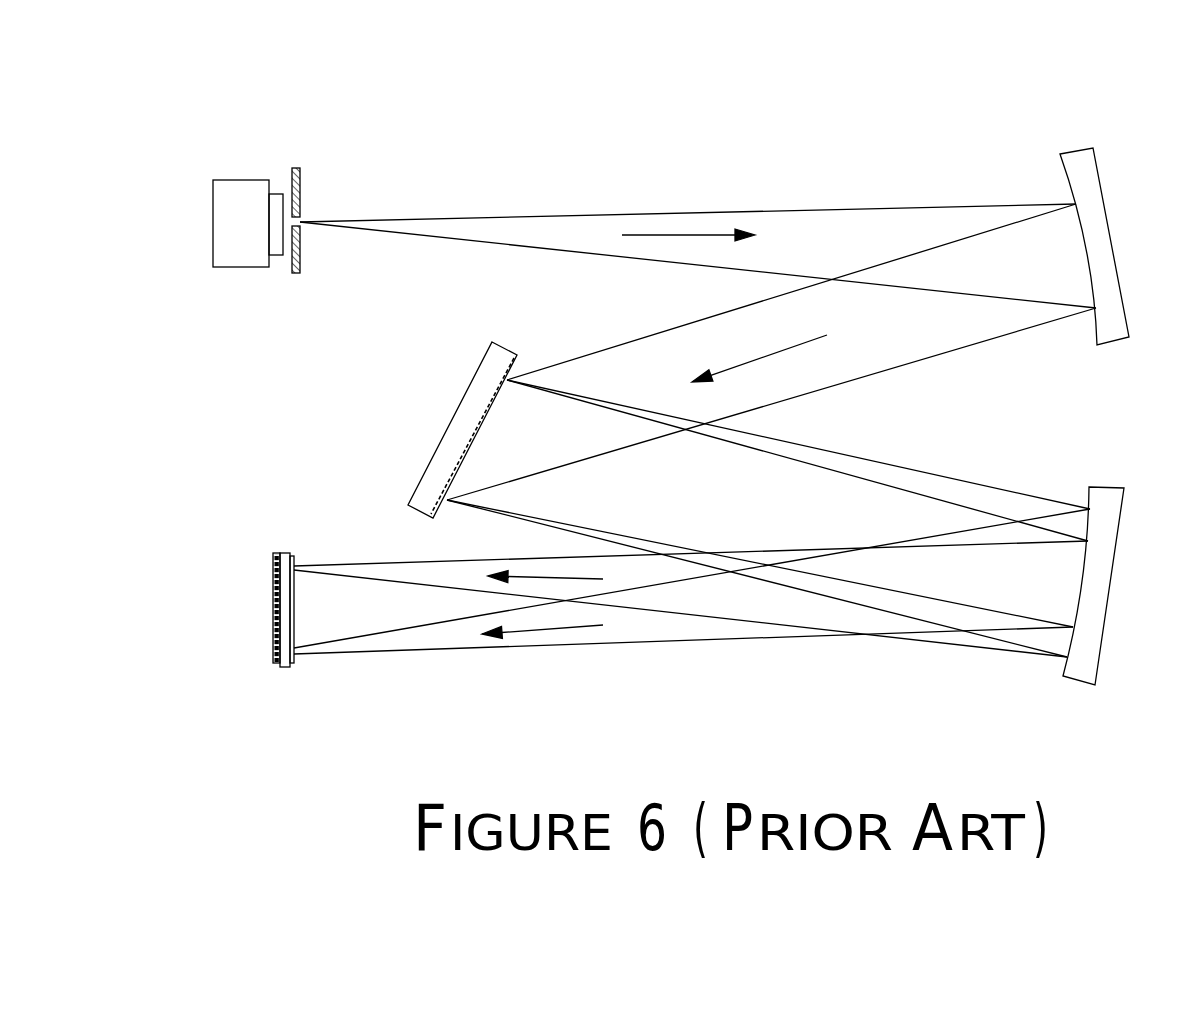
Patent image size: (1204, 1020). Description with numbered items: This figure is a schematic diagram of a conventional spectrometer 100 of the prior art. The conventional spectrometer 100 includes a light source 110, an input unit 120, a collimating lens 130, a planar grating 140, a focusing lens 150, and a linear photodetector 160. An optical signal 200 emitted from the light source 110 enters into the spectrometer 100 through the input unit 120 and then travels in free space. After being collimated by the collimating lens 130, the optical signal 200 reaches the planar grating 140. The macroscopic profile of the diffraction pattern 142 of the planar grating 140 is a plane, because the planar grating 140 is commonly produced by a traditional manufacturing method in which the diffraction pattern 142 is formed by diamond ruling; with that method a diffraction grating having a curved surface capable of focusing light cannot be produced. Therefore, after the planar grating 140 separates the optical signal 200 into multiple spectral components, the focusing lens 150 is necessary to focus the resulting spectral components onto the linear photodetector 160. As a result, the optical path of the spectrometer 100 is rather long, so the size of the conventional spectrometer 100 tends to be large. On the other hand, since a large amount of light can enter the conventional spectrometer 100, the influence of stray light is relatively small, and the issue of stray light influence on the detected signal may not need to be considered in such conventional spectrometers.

The conventional spectrometer 100 is at (650, 170).
The light source 110 is at (231, 183).
The input unit 120 is at (297, 168).
The collimating lens 130 is at (1083, 154).
The planar grating 140 is at (452, 430).
The diffraction pattern 142 is at (477, 432).
The focusing lens 150 is at (1112, 498).
The linear photodetector 160 is at (283, 670).
The optical signal 200 is at (471, 218).